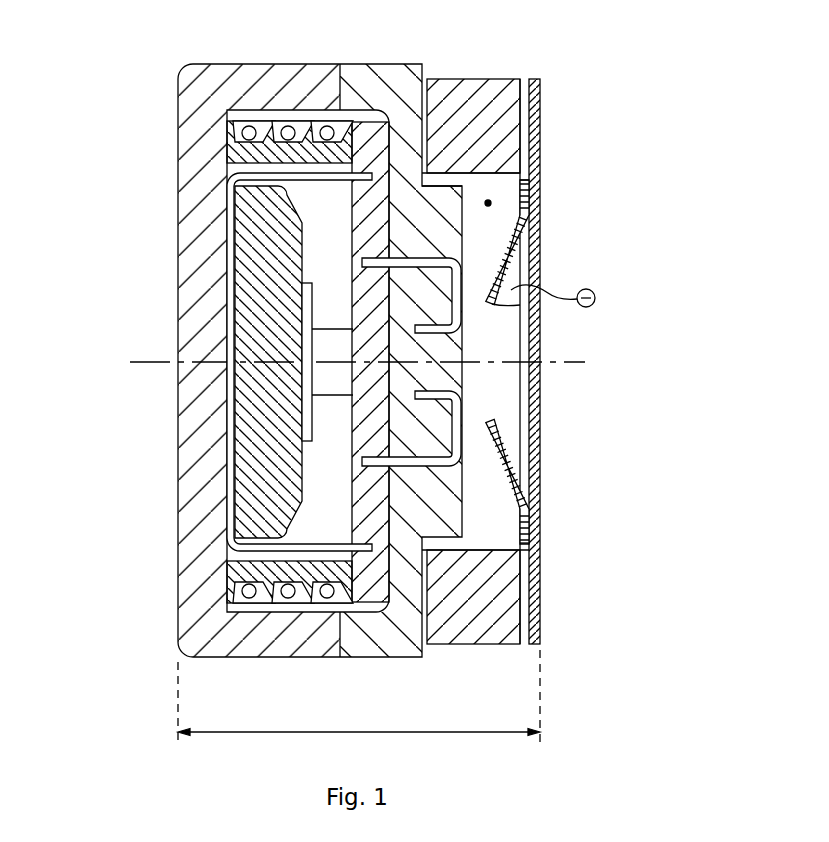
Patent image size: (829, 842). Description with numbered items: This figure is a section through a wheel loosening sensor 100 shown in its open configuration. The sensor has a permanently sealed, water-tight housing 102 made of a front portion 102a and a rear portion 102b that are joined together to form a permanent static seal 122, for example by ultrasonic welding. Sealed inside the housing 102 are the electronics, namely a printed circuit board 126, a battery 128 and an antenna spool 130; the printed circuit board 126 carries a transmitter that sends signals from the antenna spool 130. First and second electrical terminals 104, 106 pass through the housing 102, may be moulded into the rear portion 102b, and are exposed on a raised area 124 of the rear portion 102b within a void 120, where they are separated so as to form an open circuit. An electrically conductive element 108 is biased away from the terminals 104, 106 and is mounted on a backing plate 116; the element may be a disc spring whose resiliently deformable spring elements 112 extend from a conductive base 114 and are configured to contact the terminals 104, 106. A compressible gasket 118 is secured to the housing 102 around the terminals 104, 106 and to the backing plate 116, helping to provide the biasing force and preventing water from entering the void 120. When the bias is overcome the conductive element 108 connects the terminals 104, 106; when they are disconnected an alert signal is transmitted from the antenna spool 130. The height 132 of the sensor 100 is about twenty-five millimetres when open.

The sensor 100 is at (140, 452).
The housing 102 is at (178, 247).
The front portion 102a is at (193, 76).
The rear portion 102b is at (385, 66).
The first electrical terminal 104 is at (460, 257).
The second electrical terminal 106 is at (520, 450).
The electrically conductive element 108 is at (527, 517).
The spring elements 112 is at (487, 305).
The base 114 is at (522, 417).
The backing plate 116 is at (540, 595).
The gasket 118 is at (507, 79).
The void 120 is at (490, 203).
The seal 122 is at (342, 64).
The raised area 124 is at (450, 510).
The printed circuit board 126 is at (368, 587).
The battery 128 is at (252, 332).
The antenna spool 130 is at (238, 597).
The height 132 is at (359, 708).